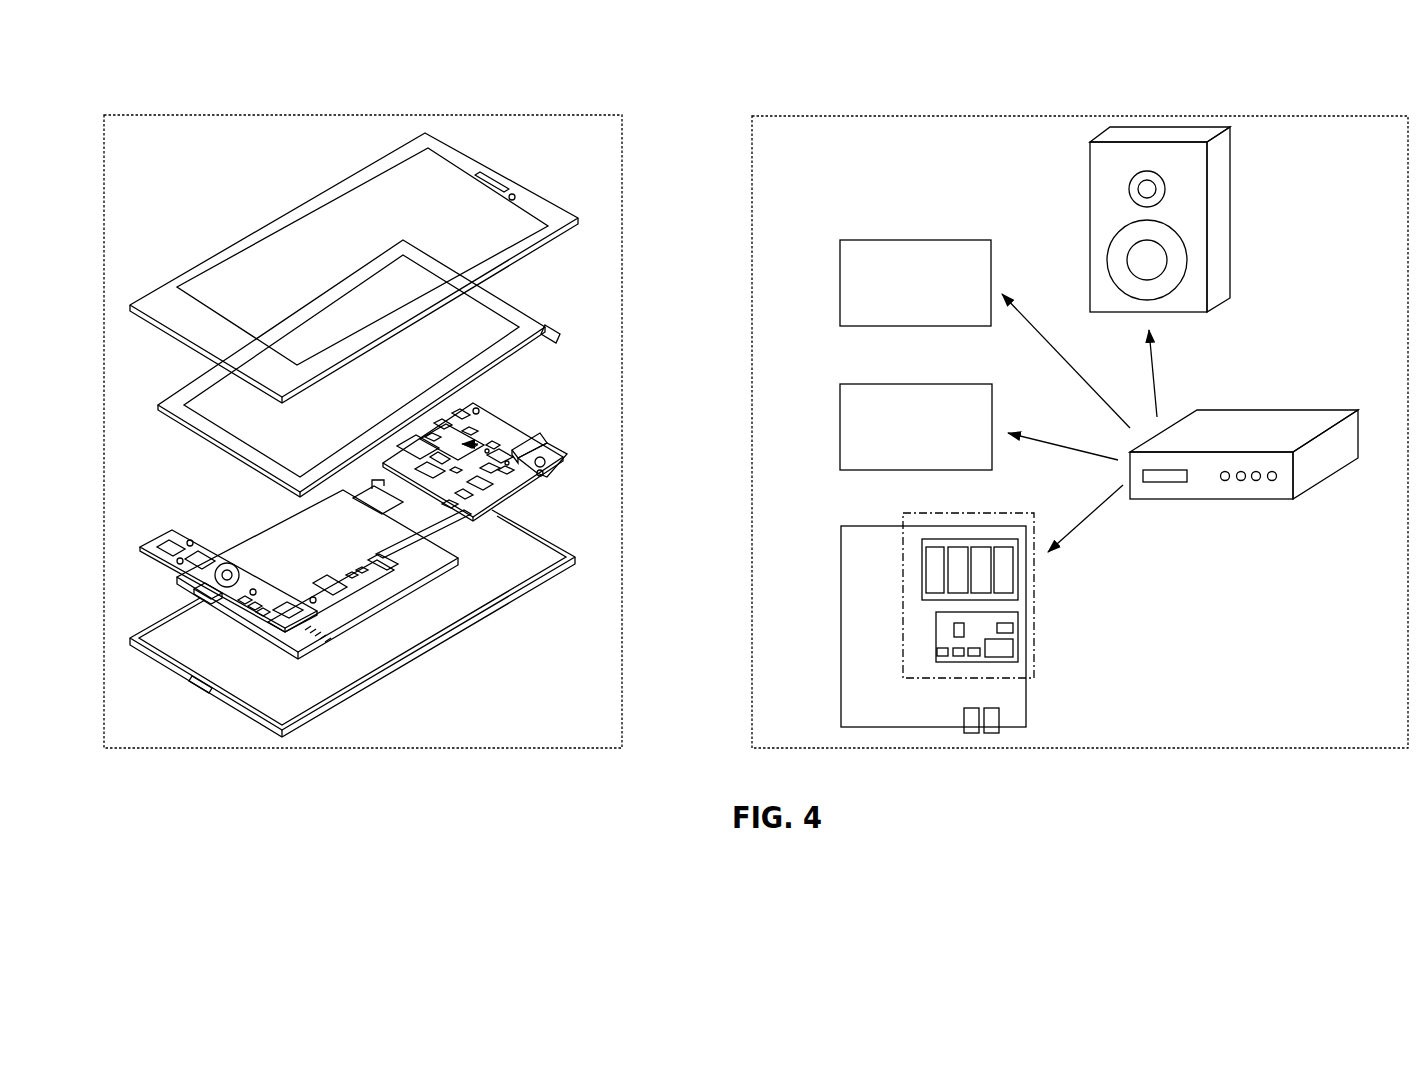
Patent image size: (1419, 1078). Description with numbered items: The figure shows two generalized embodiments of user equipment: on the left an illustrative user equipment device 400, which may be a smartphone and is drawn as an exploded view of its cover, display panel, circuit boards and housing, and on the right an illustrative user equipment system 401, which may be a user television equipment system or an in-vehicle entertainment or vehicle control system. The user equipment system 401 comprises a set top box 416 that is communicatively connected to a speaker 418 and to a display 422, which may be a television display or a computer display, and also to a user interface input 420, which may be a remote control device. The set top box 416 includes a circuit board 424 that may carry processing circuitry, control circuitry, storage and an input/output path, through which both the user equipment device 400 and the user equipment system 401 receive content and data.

The user equipment device 400 is at (190, 64).
The user equipment system 401 is at (1322, 66).
The set top box 416 is at (1279, 410).
The speaker 418 is at (1232, 272).
The user interface input 420 is at (917, 238).
The display 422 is at (917, 383).
The circuit board 424 is at (1027, 695).